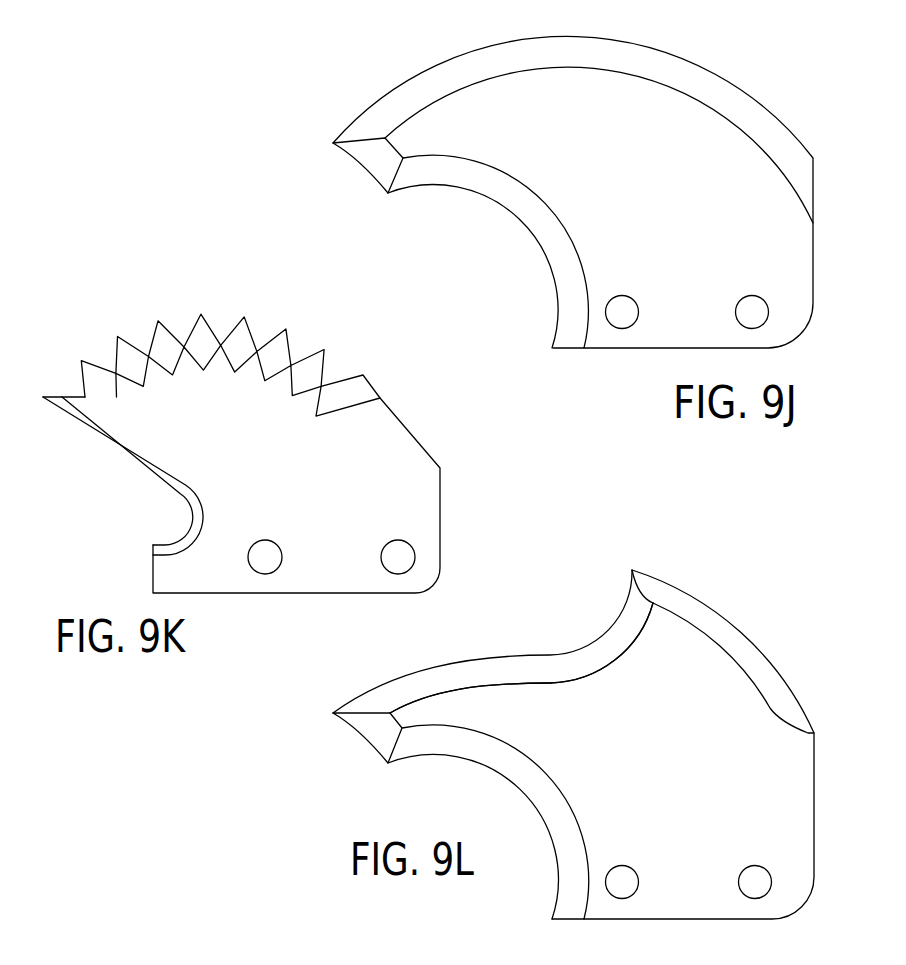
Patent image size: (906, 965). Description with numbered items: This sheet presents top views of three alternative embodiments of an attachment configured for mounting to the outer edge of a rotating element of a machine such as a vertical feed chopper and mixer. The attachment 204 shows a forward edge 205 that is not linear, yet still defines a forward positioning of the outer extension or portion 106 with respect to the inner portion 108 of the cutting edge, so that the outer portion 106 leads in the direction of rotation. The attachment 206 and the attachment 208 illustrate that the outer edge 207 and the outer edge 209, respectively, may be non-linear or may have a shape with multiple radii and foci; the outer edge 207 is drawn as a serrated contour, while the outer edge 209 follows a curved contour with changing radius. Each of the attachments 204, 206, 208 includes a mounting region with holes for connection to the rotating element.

In FIG. 9J, the attachment 204 is at (675, 195).
In FIG. 9J, the outer extension or portion 106 is at (368, 162).
In FIG. 9J, the forward edge 205 is at (500, 209).
In FIG. 9J, the inner portion 108 is at (556, 283).
In FIG. 9K, the attachment 206 is at (279, 491).
In FIG. 9K, the outer edge 207 is at (240, 340).
In FIG. 9L, the attachment 208 is at (643, 777).
In FIG. 9L, the outer edge 209 is at (592, 658).